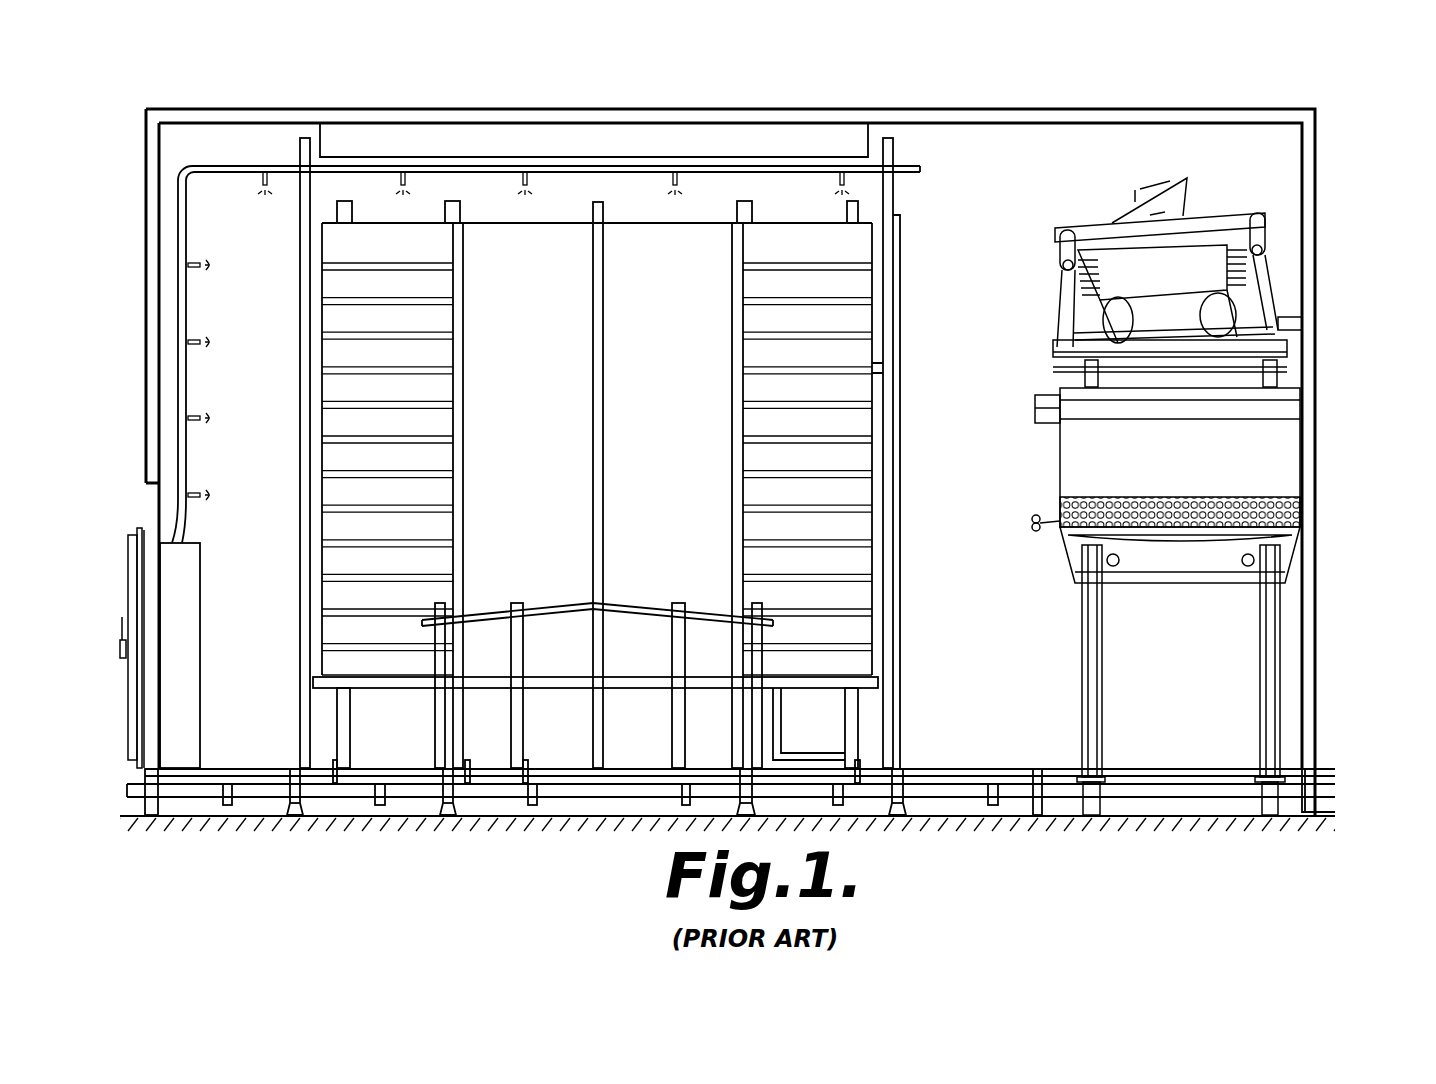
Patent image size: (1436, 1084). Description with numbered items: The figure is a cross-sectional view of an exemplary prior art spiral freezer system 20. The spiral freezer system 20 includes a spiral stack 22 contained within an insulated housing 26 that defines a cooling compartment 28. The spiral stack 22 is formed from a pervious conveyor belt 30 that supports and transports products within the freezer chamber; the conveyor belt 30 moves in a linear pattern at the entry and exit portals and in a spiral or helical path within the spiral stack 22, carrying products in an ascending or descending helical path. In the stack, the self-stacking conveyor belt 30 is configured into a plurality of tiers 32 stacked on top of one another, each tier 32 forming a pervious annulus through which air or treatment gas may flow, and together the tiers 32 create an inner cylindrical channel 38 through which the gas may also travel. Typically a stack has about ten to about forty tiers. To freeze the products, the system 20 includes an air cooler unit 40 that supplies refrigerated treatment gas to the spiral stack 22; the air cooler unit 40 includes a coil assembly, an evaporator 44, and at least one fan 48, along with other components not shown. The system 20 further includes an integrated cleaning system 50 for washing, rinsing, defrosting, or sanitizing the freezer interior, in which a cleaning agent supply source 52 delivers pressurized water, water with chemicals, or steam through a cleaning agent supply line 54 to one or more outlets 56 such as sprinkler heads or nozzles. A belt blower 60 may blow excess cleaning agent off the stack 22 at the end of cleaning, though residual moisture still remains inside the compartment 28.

The spiral freezer system 20 is at (1395, 131).
The spiral stack 22 is at (420, 225).
The insulated housing 26 is at (1320, 643).
The cooling compartment 28 is at (240, 228).
The pervious conveyor belt 30 is at (796, 265).
The tiers 32 is at (770, 230).
The inner cylindrical channel 38 is at (527, 275).
The air cooler unit 40 is at (1270, 237).
The evaporator 44 is at (1303, 448).
The fan 48 is at (1284, 272).
The integrated cleaning system 50 is at (157, 688).
The cleaning agent supply source 52 is at (172, 540).
The cleaning agent supply line 54 is at (177, 306).
The outlets 56 is at (266, 175).
The belt blower 60 is at (636, 143).